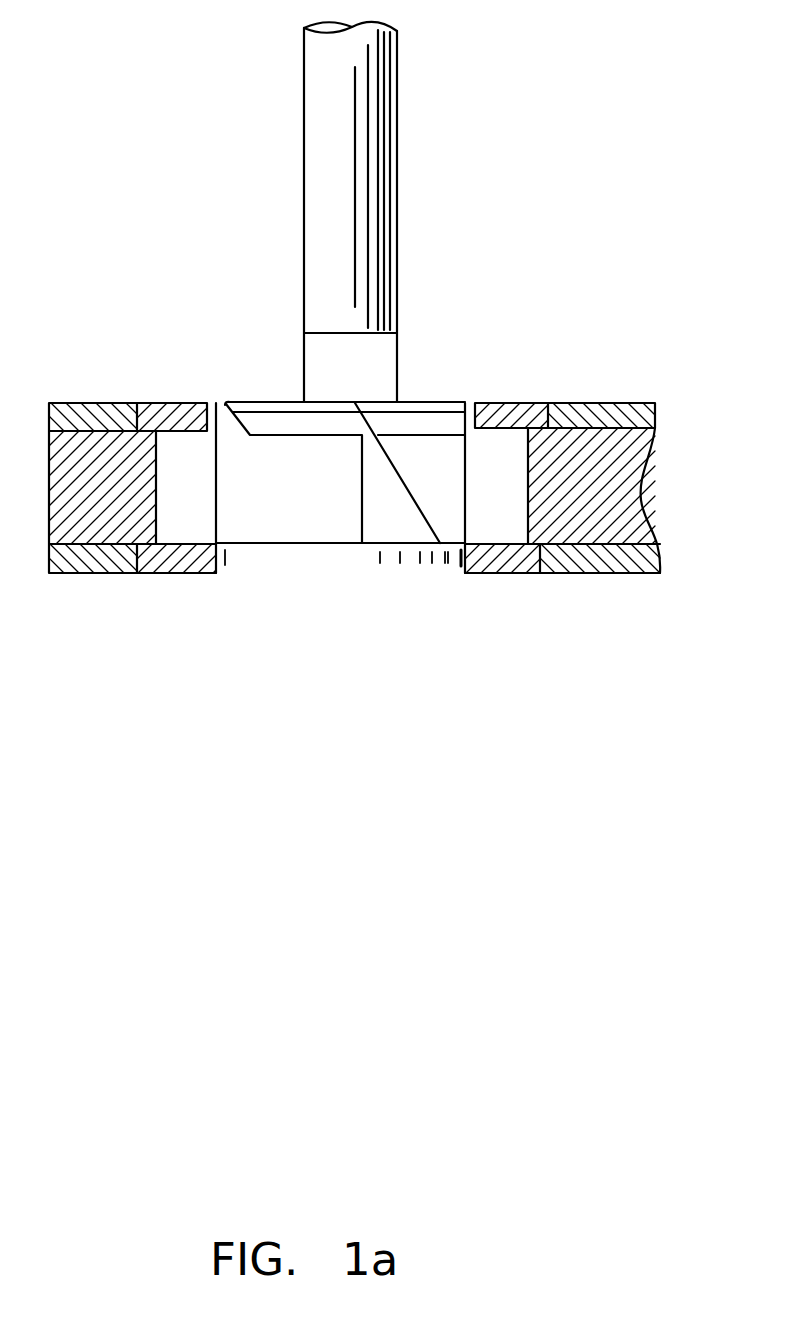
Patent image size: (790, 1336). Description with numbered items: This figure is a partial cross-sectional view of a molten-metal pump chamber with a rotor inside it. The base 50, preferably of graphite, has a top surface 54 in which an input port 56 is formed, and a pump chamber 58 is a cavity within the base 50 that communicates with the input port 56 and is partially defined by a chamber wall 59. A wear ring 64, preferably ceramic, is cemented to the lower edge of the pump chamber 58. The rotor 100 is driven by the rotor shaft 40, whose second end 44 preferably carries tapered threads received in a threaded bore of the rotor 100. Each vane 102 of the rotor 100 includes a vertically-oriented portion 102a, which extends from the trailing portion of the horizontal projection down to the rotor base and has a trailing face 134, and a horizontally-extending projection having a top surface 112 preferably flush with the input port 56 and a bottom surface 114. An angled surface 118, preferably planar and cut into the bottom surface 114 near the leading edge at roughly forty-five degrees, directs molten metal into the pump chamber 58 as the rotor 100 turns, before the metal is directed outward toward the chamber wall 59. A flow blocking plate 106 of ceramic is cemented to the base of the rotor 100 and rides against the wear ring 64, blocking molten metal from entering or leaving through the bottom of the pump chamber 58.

The rotor shaft 40 is at (398, 120).
The second end 44 is at (398, 400).
The base 50 is at (588, 585).
The top surface 54 is at (595, 400).
The input port 56 is at (208, 400).
The pump chamber 58 is at (187, 497).
The chamber wall 59 is at (158, 468).
The wear ring 64 is at (167, 573).
The rotor 100 is at (258, 390).
The vane 102 is at (318, 482).
The vertically-oriented portion 102a is at (357, 498).
The flow blocking plate 106 is at (448, 573).
The top surface 112 is at (358, 518).
The bottom surface 114 is at (272, 437).
The angled surface 118 is at (221, 400).
The trailing face 134 is at (491, 573).